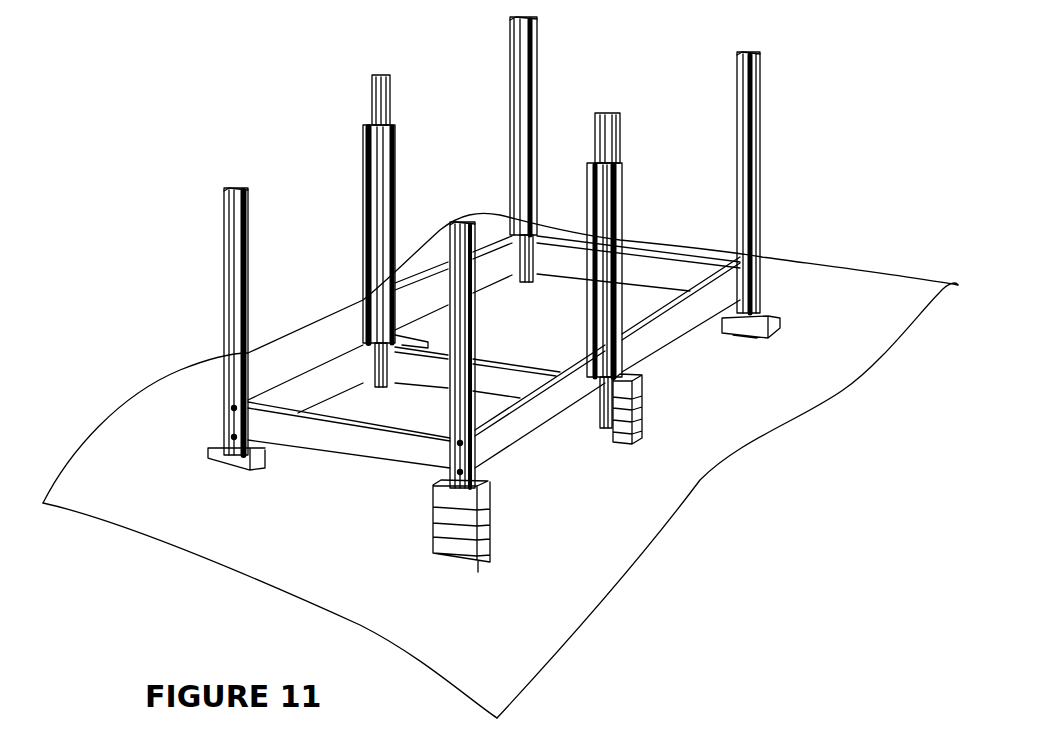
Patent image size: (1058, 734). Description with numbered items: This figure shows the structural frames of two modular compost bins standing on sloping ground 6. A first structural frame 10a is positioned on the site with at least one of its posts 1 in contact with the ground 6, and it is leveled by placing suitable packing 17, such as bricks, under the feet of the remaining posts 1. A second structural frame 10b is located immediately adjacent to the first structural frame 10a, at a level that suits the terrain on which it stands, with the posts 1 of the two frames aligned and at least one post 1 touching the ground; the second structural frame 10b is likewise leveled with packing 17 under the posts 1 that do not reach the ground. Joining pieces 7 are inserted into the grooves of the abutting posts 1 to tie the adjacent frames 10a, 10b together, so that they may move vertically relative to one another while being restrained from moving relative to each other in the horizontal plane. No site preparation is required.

The post 1 is at (233, 255).
The joining piece 7 is at (372, 110).
The sloping ground 6 is at (849, 289).
The first structural frame 10a is at (567, 304).
The second structural frame 10b is at (426, 371).
The packing 17 is at (260, 463).